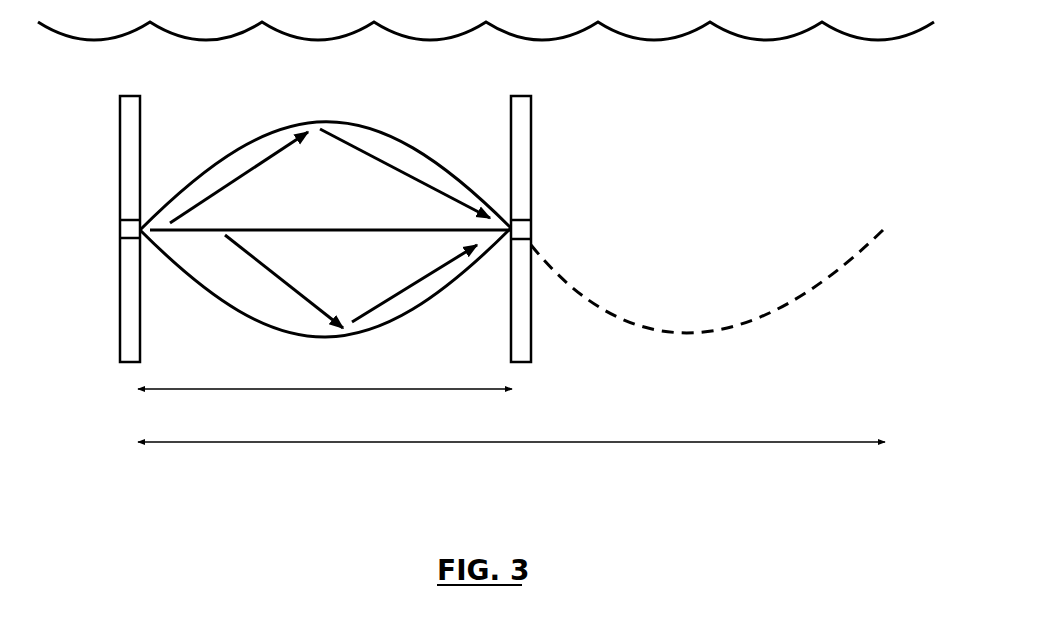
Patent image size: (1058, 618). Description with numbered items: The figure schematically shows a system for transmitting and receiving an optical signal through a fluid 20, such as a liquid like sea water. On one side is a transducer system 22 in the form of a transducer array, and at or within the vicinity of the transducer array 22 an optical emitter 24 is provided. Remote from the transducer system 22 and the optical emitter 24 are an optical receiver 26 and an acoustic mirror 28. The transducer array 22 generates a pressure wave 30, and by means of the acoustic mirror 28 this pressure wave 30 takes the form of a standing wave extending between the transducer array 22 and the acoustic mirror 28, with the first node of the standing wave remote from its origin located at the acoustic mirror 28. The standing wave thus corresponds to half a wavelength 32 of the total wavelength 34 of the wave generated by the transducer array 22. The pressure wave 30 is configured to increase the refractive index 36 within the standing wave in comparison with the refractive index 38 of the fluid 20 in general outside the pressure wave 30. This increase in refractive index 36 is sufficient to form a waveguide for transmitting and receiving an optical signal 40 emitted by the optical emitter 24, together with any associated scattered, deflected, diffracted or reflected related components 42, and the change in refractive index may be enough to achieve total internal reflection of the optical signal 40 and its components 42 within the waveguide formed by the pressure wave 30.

The fluid 20 is at (788, 91).
The transducer system 22 is at (110, 155).
The optical emitter 24 is at (116, 226).
The optical receiver 26 is at (533, 228).
The acoustic mirror 28 is at (533, 113).
The pressure wave 30 is at (257, 137).
The half wavelength 32 is at (325, 407).
The total wavelength 34 is at (511, 355).
The refractive index within the standing wave 36 is at (314, 210).
The refractive index of the fluid 38 is at (330, 104).
The optical signal 40 is at (418, 220).
The related components 42 is at (385, 153).